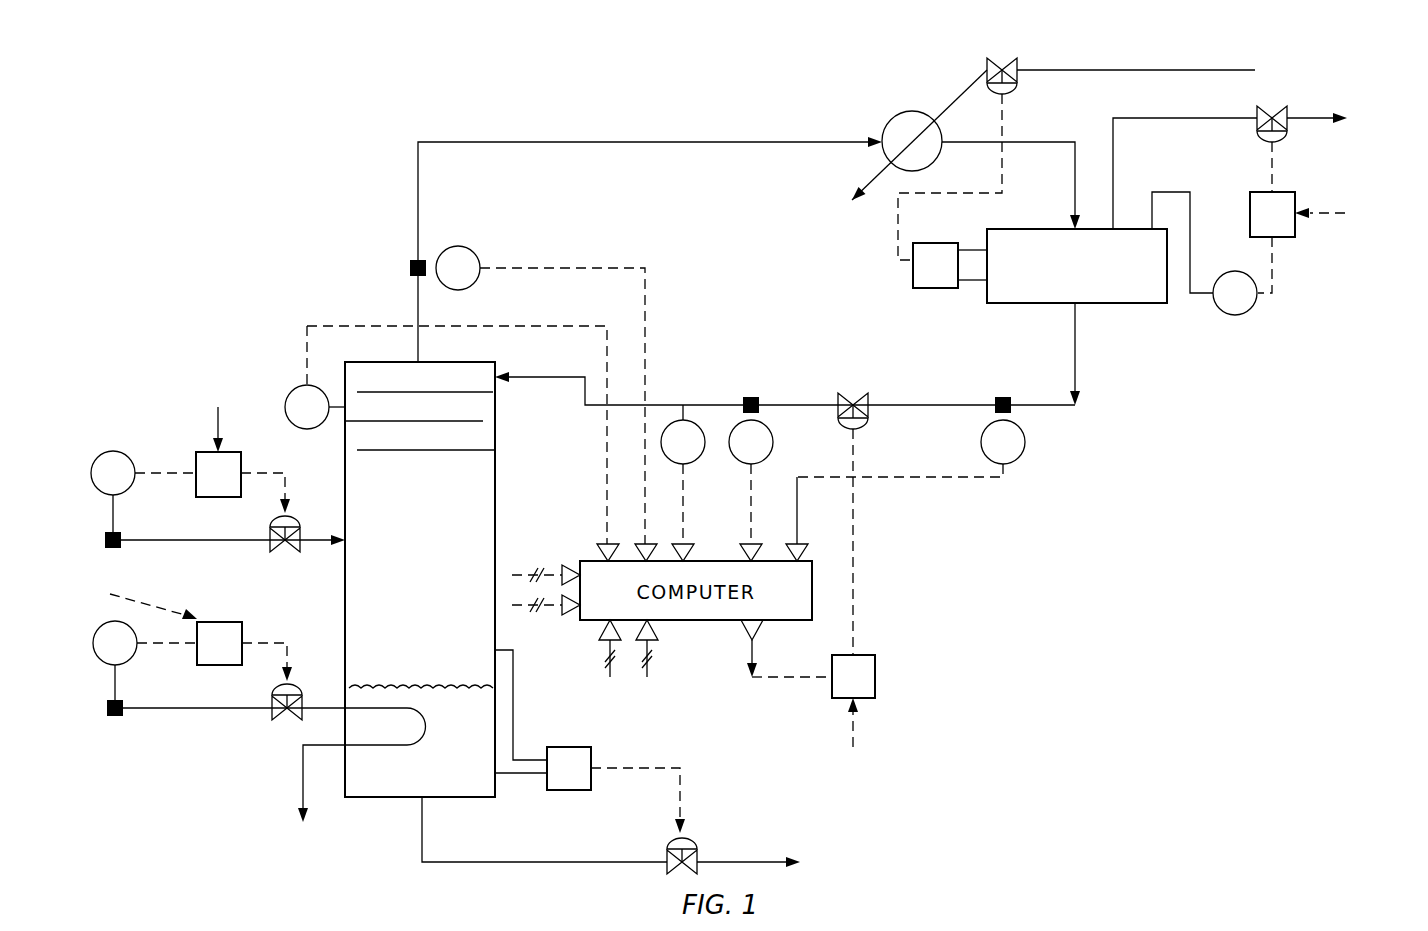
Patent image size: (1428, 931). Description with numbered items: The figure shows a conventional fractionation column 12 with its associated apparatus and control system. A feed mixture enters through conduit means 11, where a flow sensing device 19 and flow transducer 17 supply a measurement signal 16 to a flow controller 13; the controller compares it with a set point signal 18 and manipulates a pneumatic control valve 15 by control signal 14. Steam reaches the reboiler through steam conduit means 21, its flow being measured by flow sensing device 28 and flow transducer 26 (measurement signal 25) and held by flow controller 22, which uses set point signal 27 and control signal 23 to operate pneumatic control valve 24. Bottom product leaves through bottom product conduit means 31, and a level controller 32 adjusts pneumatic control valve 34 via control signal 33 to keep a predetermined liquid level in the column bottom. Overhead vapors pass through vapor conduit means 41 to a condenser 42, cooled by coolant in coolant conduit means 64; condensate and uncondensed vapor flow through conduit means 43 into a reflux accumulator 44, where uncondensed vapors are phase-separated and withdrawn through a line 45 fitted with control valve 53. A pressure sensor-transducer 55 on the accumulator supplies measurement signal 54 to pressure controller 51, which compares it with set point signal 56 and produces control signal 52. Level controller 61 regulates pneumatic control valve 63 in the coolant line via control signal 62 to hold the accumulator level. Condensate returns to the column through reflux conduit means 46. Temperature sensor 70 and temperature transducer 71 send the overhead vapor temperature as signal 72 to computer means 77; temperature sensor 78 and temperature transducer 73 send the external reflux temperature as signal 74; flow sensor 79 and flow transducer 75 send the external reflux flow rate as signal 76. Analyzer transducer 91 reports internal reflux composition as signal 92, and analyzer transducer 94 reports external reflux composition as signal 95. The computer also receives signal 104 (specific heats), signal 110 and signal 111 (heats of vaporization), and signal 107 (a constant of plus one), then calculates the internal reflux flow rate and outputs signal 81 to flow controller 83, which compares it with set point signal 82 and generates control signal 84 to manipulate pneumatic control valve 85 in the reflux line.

The conduit means 11 is at (248, 540).
The fractionation column 12 is at (497, 470).
The flow controller 13 is at (196, 452).
The control signal 14 is at (267, 476).
The pneumatic control valve 15 is at (302, 522).
The measurement signal 16 is at (158, 473).
The flow transducer 17 is at (91, 473).
The set point signal 18 is at (220, 418).
The flow sensing device 19 is at (105, 536).
The steam conduit means 21 is at (250, 709).
The flow controller 22 is at (230, 665).
The control signal 23 is at (267, 642).
The pneumatic control valve 24 is at (304, 690).
The measurement signal 25 is at (158, 643).
The flow transducer 26 is at (93, 642).
The set point signal 27 is at (198, 616).
The flow sensing device 28 is at (107, 706).
The bottom product conduit means 31 is at (543, 862).
The level controller 32 is at (570, 747).
The control signal 33 is at (683, 795).
The pneumatic control valve 34 is at (666, 848).
The vapor conduit means 41 is at (553, 142).
The condenser 42 is at (912, 110).
The conduit means 43 is at (1075, 174).
The reflux accumulator 44 is at (1130, 303).
The overhead product line 45 is at (1215, 118).
The reflux conduit means 46 is at (935, 405).
The pressure controller 51 is at (1250, 233).
The control signal 52 is at (1275, 178).
The control valve 53 is at (1288, 136).
The measurement signal 54 is at (1275, 292).
The pressure sensor-transducer 55 is at (1250, 310).
The set point signal 56 is at (1328, 213).
The level controller 61 is at (936, 288).
The control signal 62 is at (898, 265).
The pneumatic control valve 63 is at (1018, 88).
The coolant conduit means 64 is at (1108, 70).
The temperature sensor 70 is at (408, 268).
The temperature transducer 71 is at (470, 246).
The signal 72 is at (646, 292).
The temperature transducer 73 is at (773, 442).
The signal 74 is at (754, 516).
The flow transducer 75 is at (1025, 442).
The signal 76 is at (935, 477).
The computer means 77 is at (772, 622).
The temperature sensor 78 is at (751, 397).
The flow sensor 79 is at (1004, 397).
The signal 81 is at (785, 677).
The signal 82 is at (856, 735).
The flow controller 83 is at (877, 685).
The control signal 84 is at (856, 570).
The pneumatic control valve 85 is at (869, 424).
The analyzer transducer 91 is at (291, 393).
The signal 92 is at (566, 326).
The analyzer transducer 94 is at (702, 458).
The signal 95 is at (684, 500).
The signal 104 is at (545, 577).
The signal 107 is at (545, 609).
The signal 110 is at (608, 676).
The signal 111 is at (650, 674).